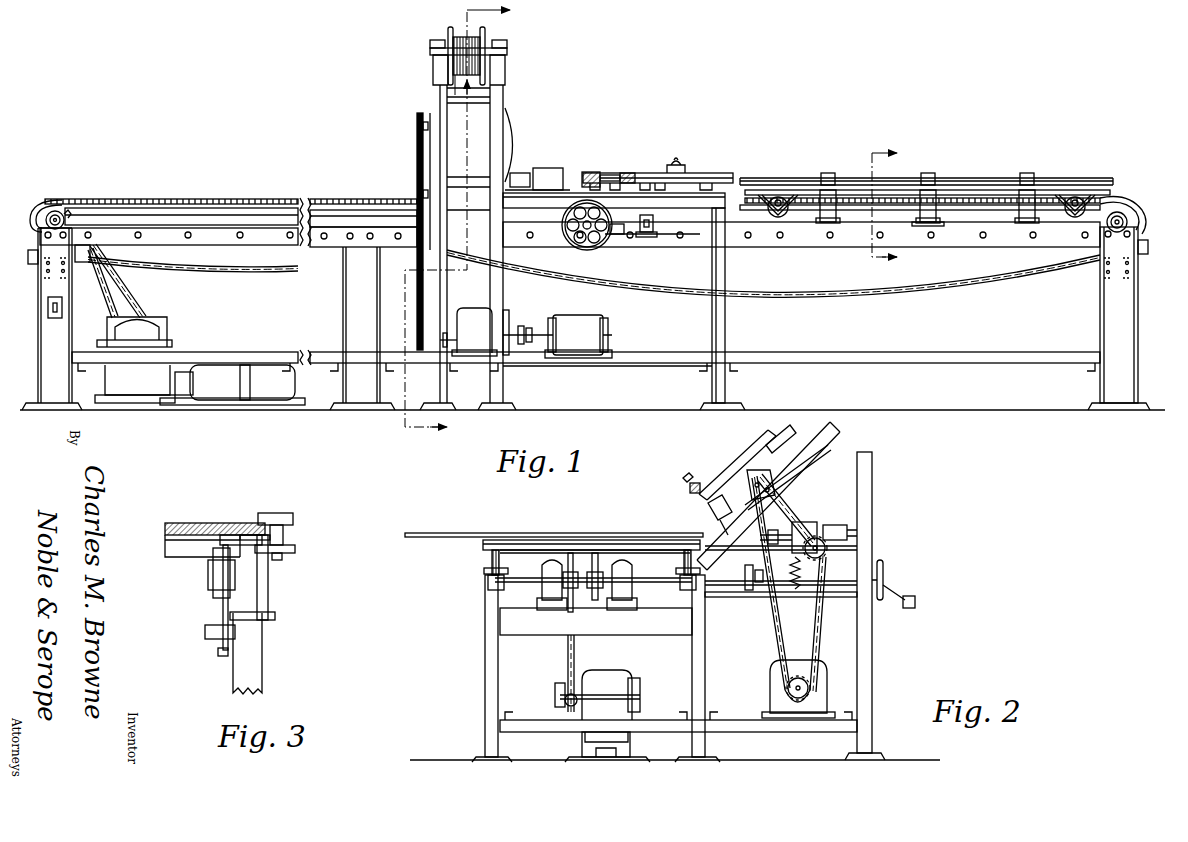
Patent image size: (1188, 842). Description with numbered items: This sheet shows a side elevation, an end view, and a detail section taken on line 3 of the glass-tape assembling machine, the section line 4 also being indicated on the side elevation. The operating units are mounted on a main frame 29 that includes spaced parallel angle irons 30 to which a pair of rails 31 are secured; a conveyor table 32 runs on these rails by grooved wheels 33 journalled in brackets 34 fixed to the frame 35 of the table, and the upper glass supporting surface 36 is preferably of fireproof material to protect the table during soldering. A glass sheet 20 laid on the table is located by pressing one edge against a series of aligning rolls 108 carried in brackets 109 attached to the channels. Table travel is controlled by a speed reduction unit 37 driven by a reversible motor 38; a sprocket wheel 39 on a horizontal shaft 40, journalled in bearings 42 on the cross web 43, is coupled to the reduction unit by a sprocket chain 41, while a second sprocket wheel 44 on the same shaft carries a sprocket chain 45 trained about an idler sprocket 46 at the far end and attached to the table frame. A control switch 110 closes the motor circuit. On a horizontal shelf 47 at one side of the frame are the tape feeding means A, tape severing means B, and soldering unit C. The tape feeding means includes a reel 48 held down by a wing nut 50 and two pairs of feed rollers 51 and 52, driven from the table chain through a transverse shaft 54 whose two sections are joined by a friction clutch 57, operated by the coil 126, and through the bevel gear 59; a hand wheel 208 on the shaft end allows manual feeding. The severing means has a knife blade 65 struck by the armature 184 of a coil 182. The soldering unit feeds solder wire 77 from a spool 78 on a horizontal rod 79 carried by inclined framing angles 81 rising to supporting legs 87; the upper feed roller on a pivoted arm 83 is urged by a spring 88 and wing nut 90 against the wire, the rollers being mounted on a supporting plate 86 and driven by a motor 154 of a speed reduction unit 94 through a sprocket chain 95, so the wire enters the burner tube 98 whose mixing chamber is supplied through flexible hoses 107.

In FIG. 2, the glass sheet 20 is at (450, 533).
In FIG. 3, the glass sheet 20 is at (195, 523).
In FIG. 1, the main frame 29 is at (365, 275).
In FIG. 2, the main frame 29 is at (484, 638).
In FIG. 3, the main frame 29 is at (262, 655).
In FIG. 1, the angle irons 30 is at (332, 240).
In FIG. 2, the angle irons 30 is at (486, 590).
In FIG. 3, the angle irons 30 is at (222, 656).
In FIG. 1, the rails 31 is at (333, 210).
In FIG. 2, the rails 31 is at (502, 585).
In FIG. 3, the rails 31 is at (222, 612).
In FIG. 1, the conveyor table 32 is at (985, 178).
In FIG. 2, the conveyor table 32 is at (530, 545).
In FIG. 3, the conveyor table 32 is at (228, 538).
In FIG. 1, the grooved wheels 33 is at (780, 217).
In FIG. 2, the grooved wheels 33 is at (490, 562).
In FIG. 3, the grooved wheels 33 is at (215, 592).
In FIG. 1, the brackets 34 is at (780, 195).
In FIG. 3, the brackets 34 is at (260, 575).
In FIG. 1, the frame of the table 35 is at (958, 190).
In FIG. 2, the frame of the table 35 is at (655, 548).
In FIG. 3, the frame of the table 35 is at (205, 558).
In FIG. 3, the upper glass supporting surface 36 is at (180, 557).
In FIG. 1, the speed reduction unit 37 is at (170, 322).
In FIG. 2, the speed reduction unit 37 is at (614, 670).
In FIG. 1, the motor 38 is at (257, 375).
In FIG. 2, the motor 38 is at (630, 740).
In FIG. 2, the sprocket wheel 39 is at (572, 553).
In FIG. 1, the horizontal shaft 40 is at (50, 208).
In FIG. 2, the horizontal shaft 40 is at (655, 583).
In FIG. 1, the sprocket chain 41 is at (123, 298).
In FIG. 2, the sprocket chain 41 is at (567, 664).
In FIG. 2, the bearings 42 is at (548, 565).
In FIG. 2, the cross web 43 is at (652, 626).
In FIG. 1, the second sprocket wheel 44 is at (66, 208).
In FIG. 2, the second sprocket wheel 44 is at (590, 608).
In FIG. 1, the sprocket chain 45 is at (212, 199).
In FIG. 2, the sprocket chain 45 is at (597, 553).
In FIG. 1, the idler sprocket 46 is at (1138, 208).
In FIG. 2, the horizontal shelf 47 is at (860, 545).
In FIG. 1, the reel 48 is at (715, 173).
In FIG. 1, the wing nut 50 is at (680, 163).
In FIG. 1, the feed rollers 51 is at (640, 173).
In FIG. 1, the feed rollers 52 is at (625, 173).
In FIG. 2, the shaft 54 is at (842, 588).
In FIG. 2, the friction clutch 57 is at (750, 590).
In FIG. 2, the bevel gear 59 is at (795, 590).
In FIG. 2, the knife blade 65 is at (777, 530).
In FIG. 1, the solder wire 77 is at (462, 58).
In FIG. 2, the solder wire 77 is at (797, 431).
In FIG. 1, the spool 78 is at (448, 33).
In FIG. 1, the horizontal rod 79 is at (500, 54).
In FIG. 2, the inclined framing angles 81 is at (790, 485).
In FIG. 2, the arm 83 is at (740, 470).
In FIG. 1, the supporting plate 86 is at (478, 120).
In FIG. 2, the supporting plate 86 is at (800, 465).
In FIG. 1, the supporting legs 87 is at (440, 97).
In FIG. 2, the supporting legs 87 is at (872, 485).
In FIG. 2, the spring 88 is at (700, 486).
In FIG. 2, the wing nut 90 is at (688, 478).
In FIG. 1, the speed reduction unit 94 is at (472, 322).
In FIG. 2, the speed reduction unit 94 is at (778, 685).
In FIG. 1, the sprocket chain 95 is at (417, 138).
In FIG. 2, the sprocket chain 95 is at (775, 650).
In FIG. 2, the gas delivery unit or burner tube 98 is at (707, 509).
In FIG. 1, the flexible hoses 107 is at (513, 150).
In FIG. 1, the aligning rolls 108 is at (928, 173).
In FIG. 3, the aligning rolls 108 is at (290, 520).
In FIG. 1, the bracket plate 109 is at (926, 226).
In FIG. 3, the bracket plate 109 is at (295, 549).
In FIG. 1, the control switch 110 is at (50, 313).
In FIG. 1, the coil 126 is at (652, 232).
In FIG. 1, the motor 154 is at (575, 328).
In FIG. 1, the coil 182 is at (586, 157).
In FIG. 2, the coil 182 is at (817, 521).
In FIG. 1, the armature 184 is at (545, 172).
In FIG. 2, the armature 184 is at (836, 525).
In FIG. 1, the hand wheel 208 is at (600, 246).
In FIG. 2, the hand wheel 208 is at (884, 580).
In FIG. 1, the tape feeding means A is at (647, 176).
In FIG. 1, the tape severing means B is at (586, 170).
In FIG. 1, the soldering unit C is at (450, 158).
In FIG. 2, the soldering unit C is at (755, 462).
In FIG. 1, the section line 3— 3 is at (901, 266).
In FIG. 1, the section line 4— 4 is at (454, 439).